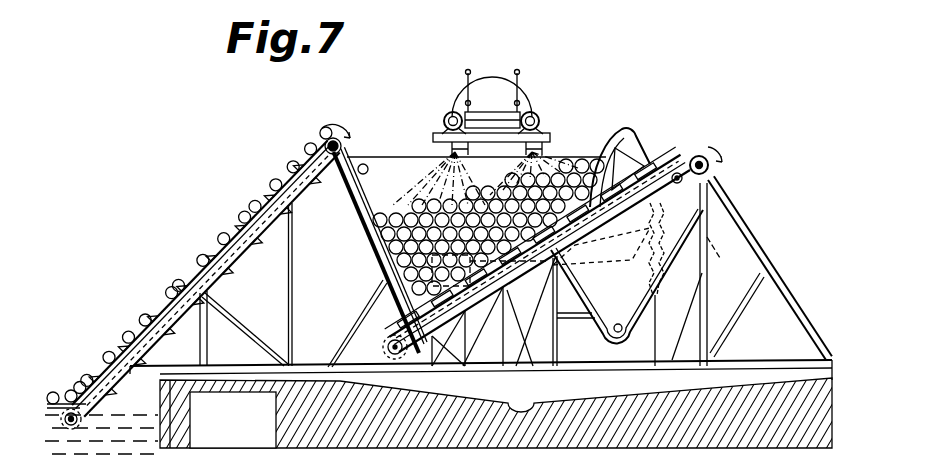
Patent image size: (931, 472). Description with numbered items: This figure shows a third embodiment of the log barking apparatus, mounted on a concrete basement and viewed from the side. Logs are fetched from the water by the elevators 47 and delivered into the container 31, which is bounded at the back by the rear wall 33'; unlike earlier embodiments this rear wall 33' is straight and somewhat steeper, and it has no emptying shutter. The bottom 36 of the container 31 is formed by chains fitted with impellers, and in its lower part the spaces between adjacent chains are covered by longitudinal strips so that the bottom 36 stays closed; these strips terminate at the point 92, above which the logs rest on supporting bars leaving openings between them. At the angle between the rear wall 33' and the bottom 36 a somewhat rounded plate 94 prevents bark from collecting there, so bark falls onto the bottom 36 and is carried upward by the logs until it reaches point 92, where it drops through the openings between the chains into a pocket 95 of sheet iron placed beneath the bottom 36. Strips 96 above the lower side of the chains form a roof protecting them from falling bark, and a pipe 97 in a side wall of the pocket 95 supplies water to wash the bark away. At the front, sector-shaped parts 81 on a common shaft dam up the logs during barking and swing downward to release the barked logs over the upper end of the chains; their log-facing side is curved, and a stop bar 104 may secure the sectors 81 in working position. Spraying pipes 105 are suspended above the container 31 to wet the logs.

The spraying pipes 105 is at (485, 138).
The container 31 is at (366, 164).
The rear wall 33' is at (380, 239).
The elevators 47 is at (228, 246).
The sector-shaped parts 81 is at (640, 148).
The stop bar 104 is at (620, 247).
The strips 96 is at (606, 263).
The terminating point of the strips 92 is at (580, 270).
The pipe 97 is at (618, 324).
The pocket 95 is at (658, 290).
The bottom 36 is at (512, 286).
The rounded plate 94 is at (401, 322).